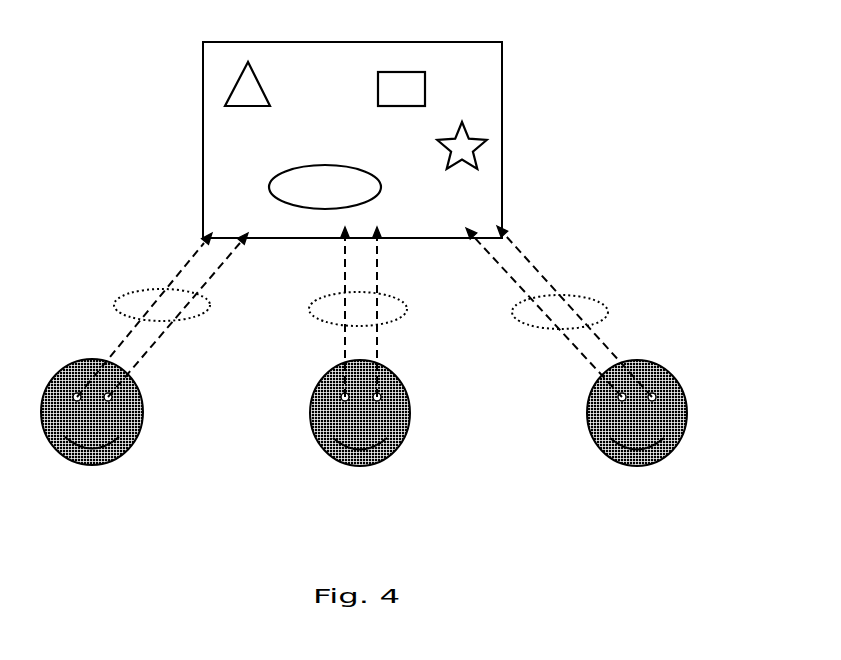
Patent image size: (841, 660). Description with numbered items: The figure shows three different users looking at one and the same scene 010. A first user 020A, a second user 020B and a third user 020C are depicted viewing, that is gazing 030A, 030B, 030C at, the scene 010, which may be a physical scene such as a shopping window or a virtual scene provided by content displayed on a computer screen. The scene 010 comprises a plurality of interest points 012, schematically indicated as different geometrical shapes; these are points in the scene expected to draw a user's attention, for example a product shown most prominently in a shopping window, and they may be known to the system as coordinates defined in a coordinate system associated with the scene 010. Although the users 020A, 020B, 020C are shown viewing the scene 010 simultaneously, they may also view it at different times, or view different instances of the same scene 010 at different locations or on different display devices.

The scene 010 is at (502, 185).
The interest points 012 is at (303, 67).
The first user 020A is at (118, 453).
The second user 020B is at (388, 458).
The third user 020C is at (668, 457).
The gazing 030A is at (187, 322).
The gazing 030B is at (393, 327).
The gazing 030C is at (537, 327).